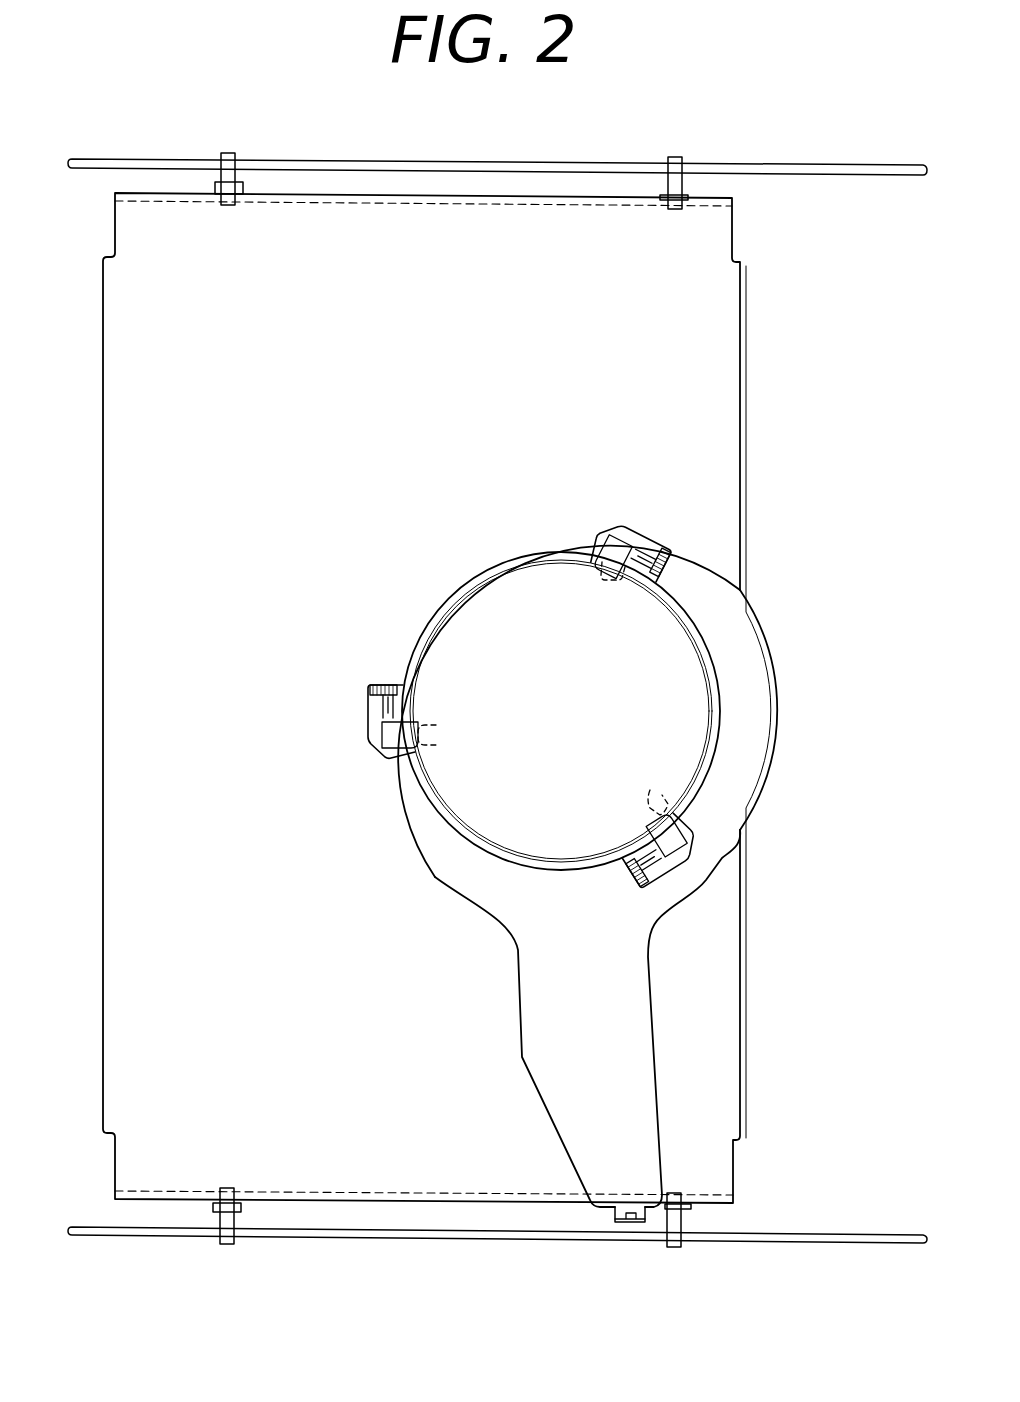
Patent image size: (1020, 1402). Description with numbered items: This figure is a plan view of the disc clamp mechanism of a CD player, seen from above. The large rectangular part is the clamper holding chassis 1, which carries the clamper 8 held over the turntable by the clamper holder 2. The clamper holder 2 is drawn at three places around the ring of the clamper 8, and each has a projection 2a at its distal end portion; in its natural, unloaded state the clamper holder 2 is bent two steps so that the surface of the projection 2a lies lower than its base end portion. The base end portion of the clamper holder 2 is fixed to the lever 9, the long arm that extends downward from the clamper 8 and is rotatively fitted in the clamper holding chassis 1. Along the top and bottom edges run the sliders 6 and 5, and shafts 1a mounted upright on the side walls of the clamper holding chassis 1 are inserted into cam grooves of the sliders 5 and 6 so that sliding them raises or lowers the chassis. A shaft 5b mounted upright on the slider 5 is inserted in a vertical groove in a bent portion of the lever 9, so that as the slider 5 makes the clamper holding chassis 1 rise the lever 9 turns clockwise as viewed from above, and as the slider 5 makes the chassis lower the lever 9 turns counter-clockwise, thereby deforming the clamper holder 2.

The clamper holding chassis 1 is at (715, 352).
The shaft 1a is at (232, 180).
The clamper holder 2 is at (620, 560).
The projection 2a is at (436, 735).
The slider 5 is at (112, 1233).
The shaft 5b is at (635, 1226).
The slider 6 is at (512, 160).
The clamper 8 is at (697, 665).
The lever 9 is at (637, 1040).